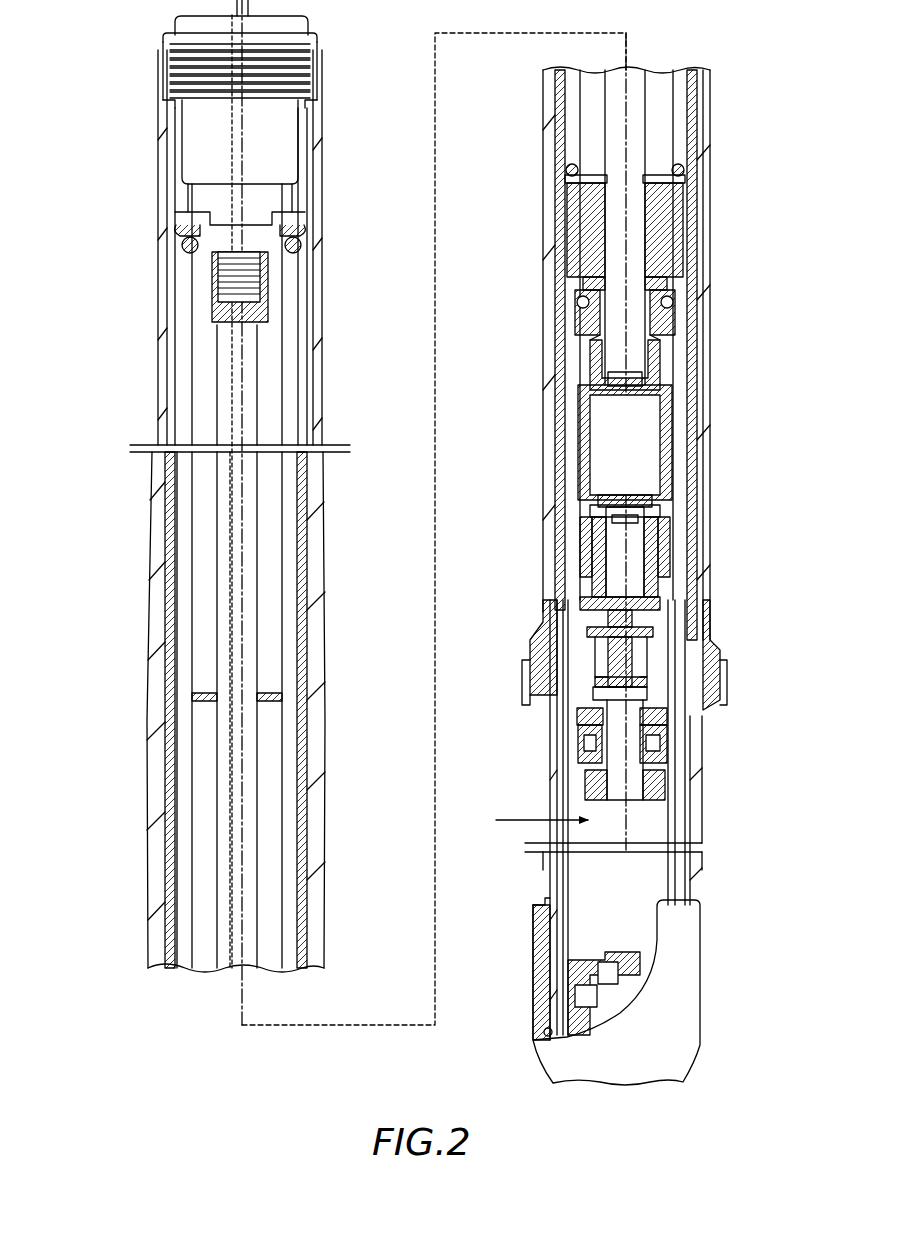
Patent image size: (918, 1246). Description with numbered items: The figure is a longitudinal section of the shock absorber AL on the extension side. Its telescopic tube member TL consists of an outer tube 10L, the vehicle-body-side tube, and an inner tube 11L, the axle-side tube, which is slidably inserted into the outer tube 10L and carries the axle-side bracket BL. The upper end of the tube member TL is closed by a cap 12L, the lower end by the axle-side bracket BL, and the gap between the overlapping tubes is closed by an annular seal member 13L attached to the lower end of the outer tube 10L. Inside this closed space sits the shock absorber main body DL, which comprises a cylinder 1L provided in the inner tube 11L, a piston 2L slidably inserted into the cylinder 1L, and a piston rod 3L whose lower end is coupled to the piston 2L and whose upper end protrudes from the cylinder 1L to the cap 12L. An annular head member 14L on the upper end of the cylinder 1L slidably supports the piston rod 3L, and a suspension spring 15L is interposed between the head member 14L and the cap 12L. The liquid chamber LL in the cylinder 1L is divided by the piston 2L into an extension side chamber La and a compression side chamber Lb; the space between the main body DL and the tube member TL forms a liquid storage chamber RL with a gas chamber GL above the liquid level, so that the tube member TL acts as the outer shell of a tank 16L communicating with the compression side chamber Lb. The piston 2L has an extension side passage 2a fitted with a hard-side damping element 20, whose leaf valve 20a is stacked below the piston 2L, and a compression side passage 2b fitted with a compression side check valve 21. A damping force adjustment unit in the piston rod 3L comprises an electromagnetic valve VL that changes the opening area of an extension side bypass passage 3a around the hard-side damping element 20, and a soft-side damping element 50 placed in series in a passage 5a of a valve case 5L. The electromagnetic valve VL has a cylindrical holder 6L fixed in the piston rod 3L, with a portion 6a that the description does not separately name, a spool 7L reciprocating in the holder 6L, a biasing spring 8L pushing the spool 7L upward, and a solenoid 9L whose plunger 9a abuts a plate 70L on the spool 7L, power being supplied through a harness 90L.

The shock absorber on the extension side AL is at (148, 80).
The cap 12L is at (305, 85).
The outer tube 10L is at (320, 372).
The gas chamber GL is at (205, 515).
The liquid storage chamber RL is at (205, 800).
The piston rod 3L is at (250, 825).
The tube member TL is at (150, 910).
The tank 16L is at (186, 710).
The suspension spring 15L is at (700, 165).
The head member 14L is at (700, 222).
The extension side chamber La is at (570, 375).
The harness 90L is at (560, 320).
The shock absorber main body DL is at (705, 350).
The solenoid 9L is at (672, 425).
The plunger 9a is at (660, 490).
The plate 70L is at (610, 503).
The sleeve portion 6a is at (600, 530).
The holder 6L is at (605, 552).
The electromagnetic valve VL is at (680, 510).
The spool 7L is at (650, 563).
The biasing spring 8L is at (560, 598).
The extension side bypass passage 3a is at (690, 610).
The passage 5a is at (585, 650).
The valve case 5L is at (665, 650).
The soft-side damping element 50 is at (585, 692).
The annular seal member 13L is at (700, 702).
The extension side passage 2a is at (580, 745).
The compression side check valve 21 is at (660, 725).
The piston 2L is at (572, 748).
The compression side passage 2b is at (660, 742).
The hard-side damping element 20 is at (590, 772).
The leaf valve 20a is at (660, 762).
The liquid chamber LL is at (527, 821).
The inner tube 11L is at (700, 805).
The cylinder 1L is at (555, 877).
The compression side chamber Lb is at (622, 874).
The axle-side bracket BL is at (690, 985).